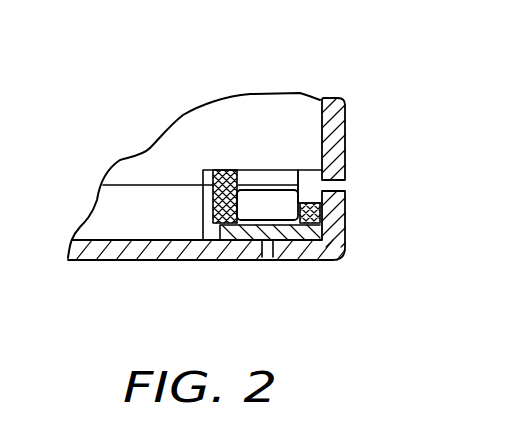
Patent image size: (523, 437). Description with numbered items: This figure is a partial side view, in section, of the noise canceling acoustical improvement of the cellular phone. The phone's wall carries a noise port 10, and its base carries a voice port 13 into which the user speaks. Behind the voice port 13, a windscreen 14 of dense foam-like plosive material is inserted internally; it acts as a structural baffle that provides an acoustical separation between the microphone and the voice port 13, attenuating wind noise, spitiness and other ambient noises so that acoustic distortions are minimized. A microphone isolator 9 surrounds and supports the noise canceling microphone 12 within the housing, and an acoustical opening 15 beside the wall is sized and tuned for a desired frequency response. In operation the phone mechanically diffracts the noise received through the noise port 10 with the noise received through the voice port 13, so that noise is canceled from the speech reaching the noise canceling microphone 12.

The microphone isolator 9 is at (220, 170).
The noise port 10 is at (345, 190).
The noise canceling microphone 12 is at (338, 247).
The voice port 13 is at (271, 260).
The windscreen 14 is at (210, 258).
The acoustical opening 15 is at (307, 183).